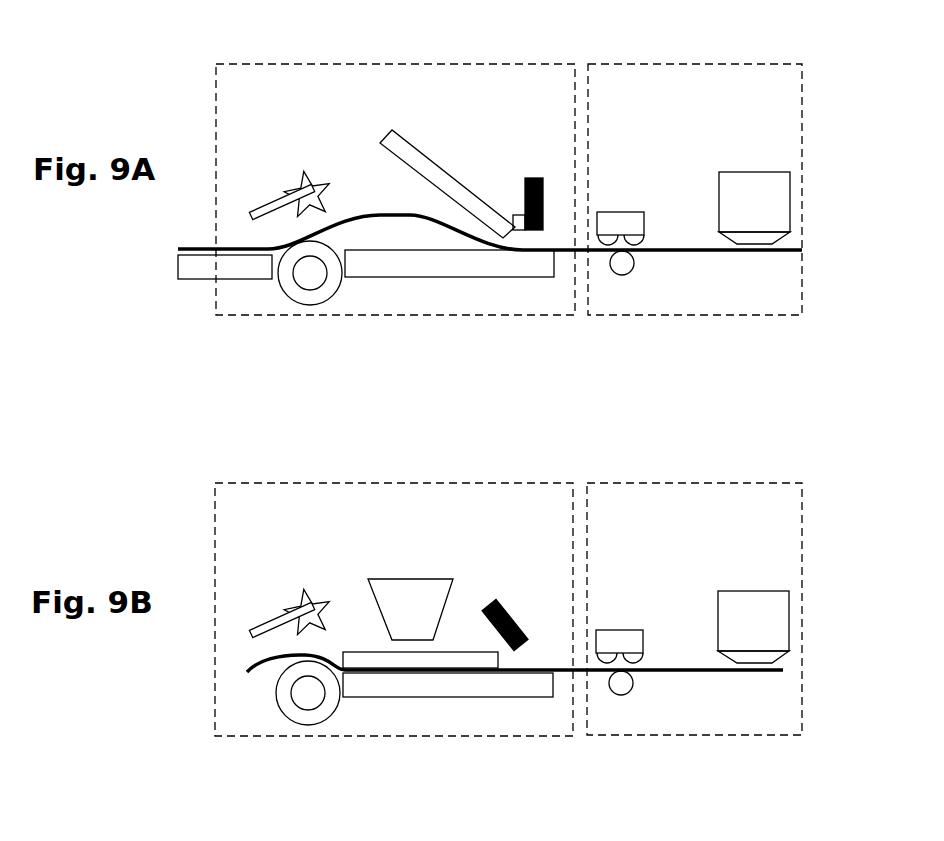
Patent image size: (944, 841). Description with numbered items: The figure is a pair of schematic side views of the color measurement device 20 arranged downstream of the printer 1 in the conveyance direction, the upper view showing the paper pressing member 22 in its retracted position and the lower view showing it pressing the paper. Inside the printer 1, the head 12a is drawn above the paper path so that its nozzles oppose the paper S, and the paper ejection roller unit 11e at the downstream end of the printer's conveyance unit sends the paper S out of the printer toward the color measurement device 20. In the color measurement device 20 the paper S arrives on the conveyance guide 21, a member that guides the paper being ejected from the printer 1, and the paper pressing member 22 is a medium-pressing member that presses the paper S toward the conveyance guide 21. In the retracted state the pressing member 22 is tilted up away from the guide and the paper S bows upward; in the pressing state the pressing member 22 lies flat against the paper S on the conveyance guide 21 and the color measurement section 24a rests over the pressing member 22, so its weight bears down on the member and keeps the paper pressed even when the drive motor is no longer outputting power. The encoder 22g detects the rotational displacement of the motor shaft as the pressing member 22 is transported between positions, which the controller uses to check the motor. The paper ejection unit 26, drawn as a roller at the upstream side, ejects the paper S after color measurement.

In FIG. 9A, the printer 1 is at (690, 63).
In FIG. 9B, the printer 1 is at (685, 482).
In FIG. 9A, the color measurement device 20 is at (412, 63).
In FIG. 9B, the color measurement device 20 is at (408, 482).
In FIG. 9A, the conveyance guide 21 is at (453, 265).
In FIG. 9B, the conveyance guide 21 is at (462, 688).
In FIG. 9A, the paper pressing member 22 is at (436, 173).
In FIG. 9B, the paper pressing member 22 is at (458, 660).
In FIG. 9A, the encoder 22g is at (527, 162).
In FIG. 9B, the encoder 22g is at (517, 603).
In FIG. 9B, the color measurement section 24a is at (410, 585).
In FIG. 9A, the paper ejection unit 26 is at (313, 325).
In FIG. 9B, the paper ejection unit 26 is at (311, 748).
In FIG. 9A, the paper S is at (265, 248).
In FIG. 9B, the paper S is at (258, 665).
In FIG. 9A, the head 12a is at (772, 202).
In FIG. 9B, the head 12a is at (770, 620).
In FIG. 9A, the paper ejection roller unit 11e is at (658, 240).
In FIG. 9B, the paper ejection roller unit 11e is at (658, 660).